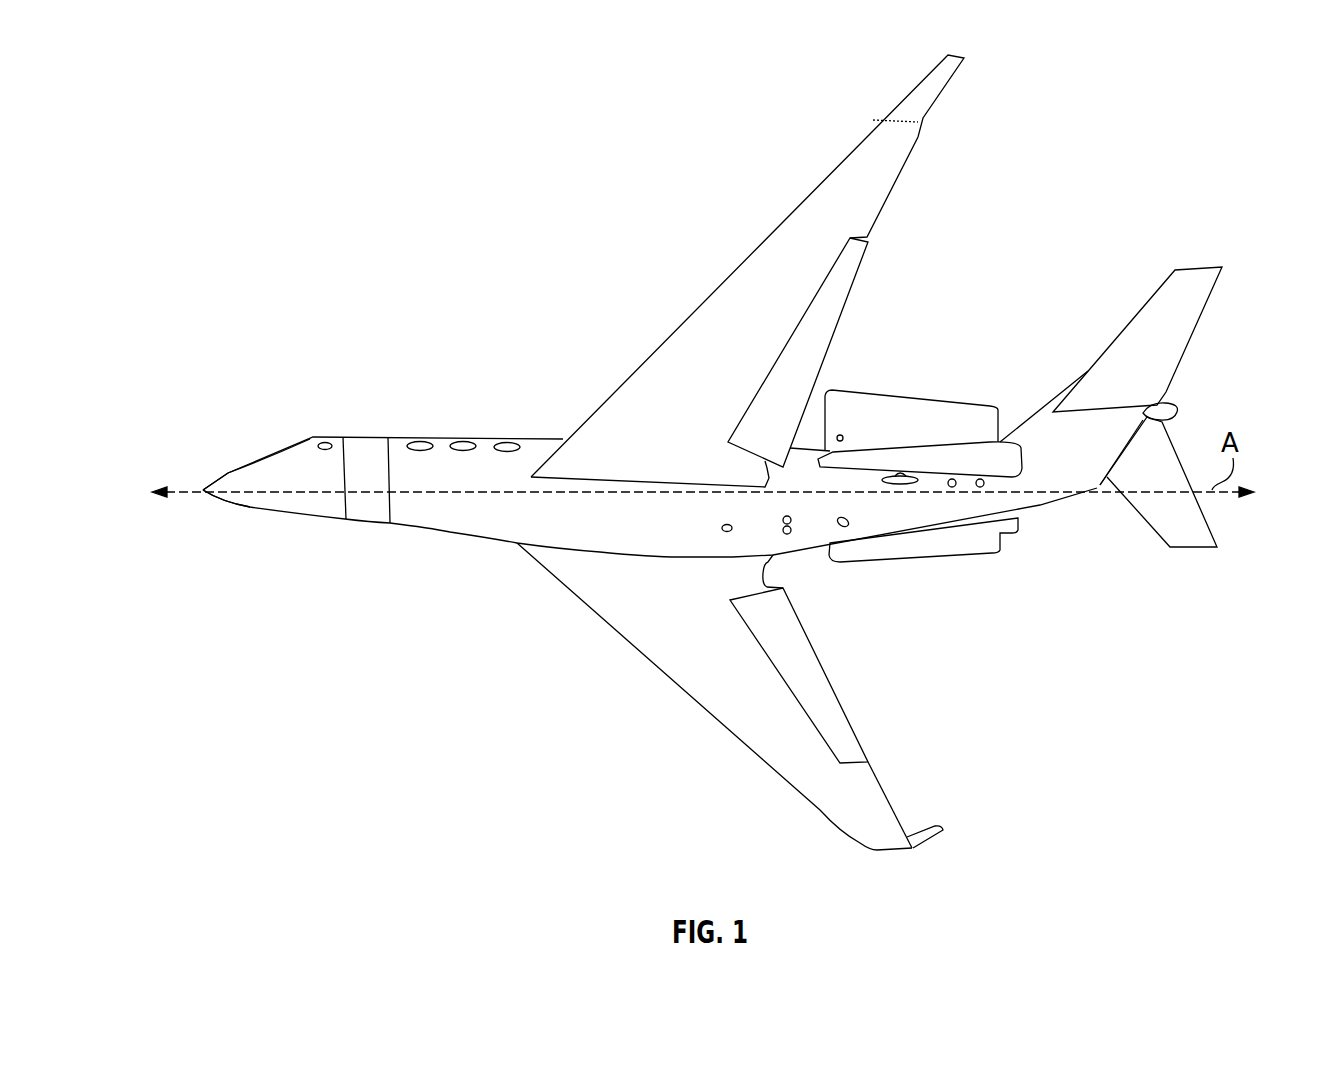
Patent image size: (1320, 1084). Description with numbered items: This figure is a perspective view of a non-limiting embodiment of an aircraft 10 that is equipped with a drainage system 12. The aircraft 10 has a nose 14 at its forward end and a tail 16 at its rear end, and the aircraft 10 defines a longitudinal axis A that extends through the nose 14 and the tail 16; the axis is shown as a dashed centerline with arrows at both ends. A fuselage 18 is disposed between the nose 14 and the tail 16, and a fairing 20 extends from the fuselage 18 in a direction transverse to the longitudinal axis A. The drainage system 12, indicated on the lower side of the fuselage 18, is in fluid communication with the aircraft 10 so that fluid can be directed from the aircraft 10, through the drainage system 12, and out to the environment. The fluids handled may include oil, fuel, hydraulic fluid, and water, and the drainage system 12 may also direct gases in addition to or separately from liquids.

The aircraft 10 is at (513, 350).
The drainage system 12 is at (845, 527).
The nose 14 is at (203, 490).
The tail 16 is at (1100, 485).
The fuselage 18 is at (443, 460).
The fairing 20 is at (515, 533).